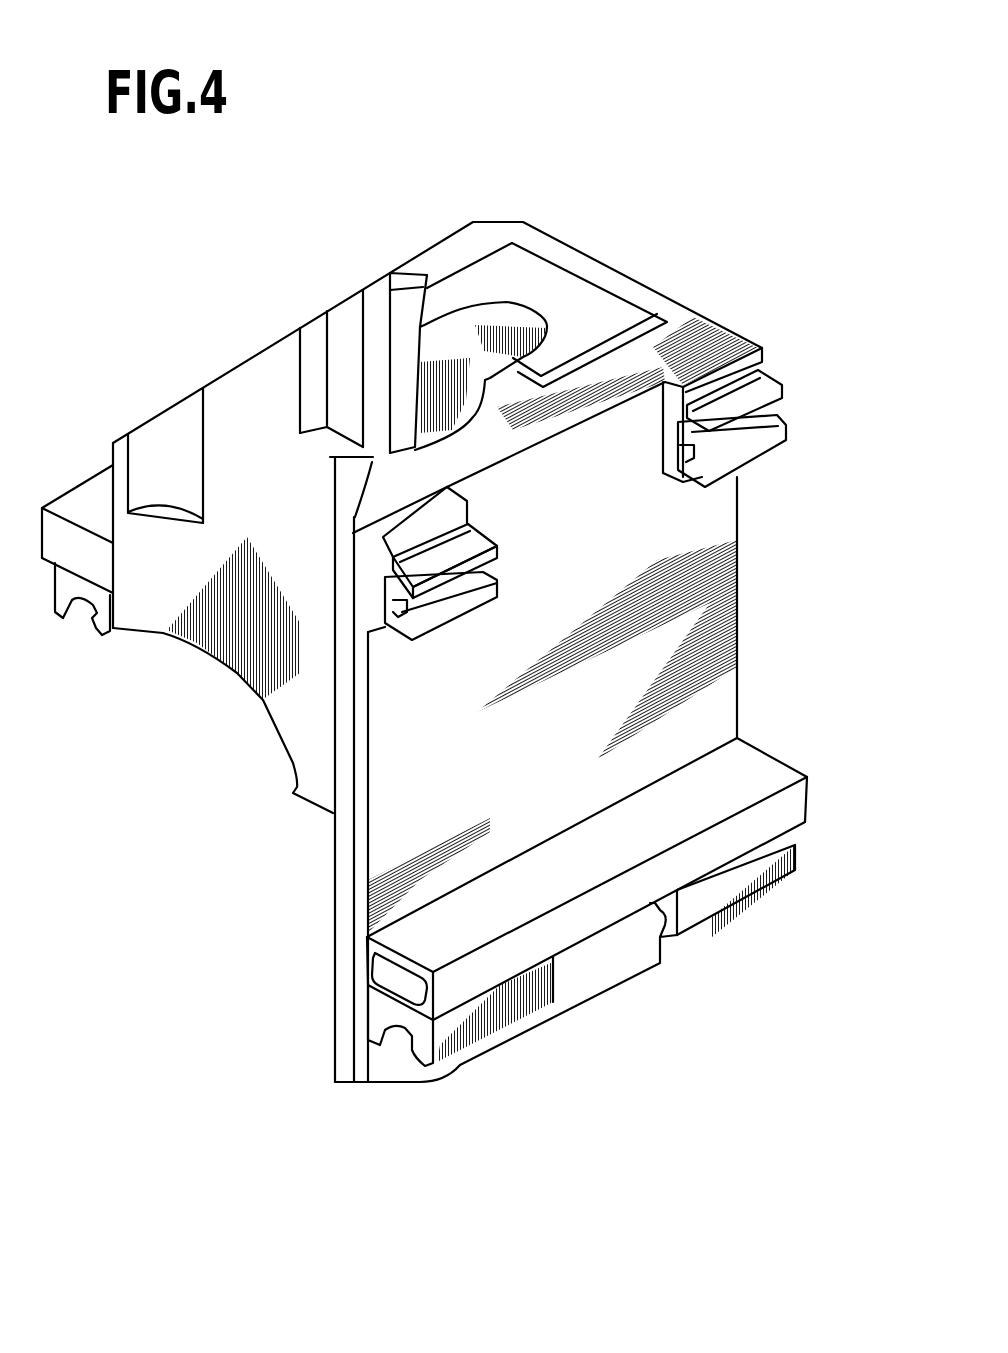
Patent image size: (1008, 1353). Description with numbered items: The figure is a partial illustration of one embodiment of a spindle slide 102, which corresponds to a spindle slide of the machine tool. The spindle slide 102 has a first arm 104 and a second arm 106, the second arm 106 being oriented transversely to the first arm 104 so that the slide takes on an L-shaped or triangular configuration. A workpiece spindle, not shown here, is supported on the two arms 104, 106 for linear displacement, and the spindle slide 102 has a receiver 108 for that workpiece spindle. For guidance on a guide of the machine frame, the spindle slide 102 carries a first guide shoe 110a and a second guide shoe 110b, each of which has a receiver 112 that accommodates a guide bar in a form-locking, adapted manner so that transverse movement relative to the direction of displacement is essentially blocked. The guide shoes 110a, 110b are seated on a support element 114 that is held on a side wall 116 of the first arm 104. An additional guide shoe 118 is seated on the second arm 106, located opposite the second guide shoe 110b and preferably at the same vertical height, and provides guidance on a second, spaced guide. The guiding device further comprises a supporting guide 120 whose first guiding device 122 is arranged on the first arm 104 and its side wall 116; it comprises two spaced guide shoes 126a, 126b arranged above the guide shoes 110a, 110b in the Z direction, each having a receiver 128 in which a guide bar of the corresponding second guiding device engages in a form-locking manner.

The spindle slide 102 is at (686, 261).
The first arm 104 is at (723, 680).
The second arm 106 is at (540, 242).
The receiver 108 is at (447, 350).
The first guide shoe 110a is at (510, 1023).
The second guide shoe 110b is at (743, 890).
The receiver 112 is at (407, 1033).
The support element 114 is at (753, 767).
The side wall 116 is at (400, 833).
The additional guide shoe 118 is at (102, 615).
The supporting guide 120 is at (832, 397).
The first guiding device 122 is at (782, 464).
The guide shoe 126a is at (448, 615).
The guide shoe 126b is at (717, 473).
The receiver 128 is at (397, 607).